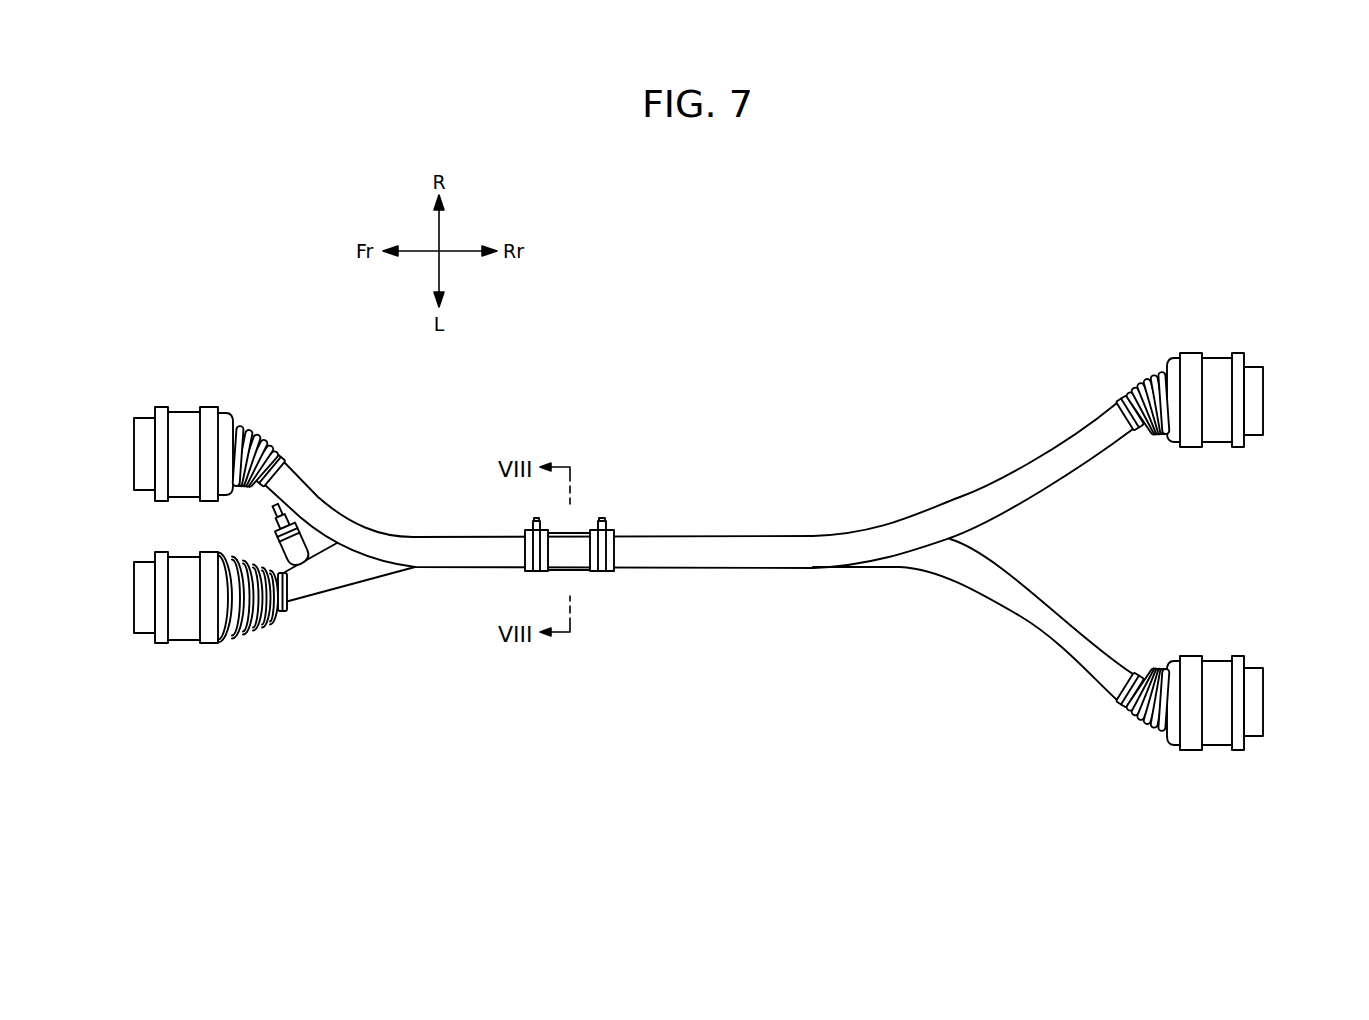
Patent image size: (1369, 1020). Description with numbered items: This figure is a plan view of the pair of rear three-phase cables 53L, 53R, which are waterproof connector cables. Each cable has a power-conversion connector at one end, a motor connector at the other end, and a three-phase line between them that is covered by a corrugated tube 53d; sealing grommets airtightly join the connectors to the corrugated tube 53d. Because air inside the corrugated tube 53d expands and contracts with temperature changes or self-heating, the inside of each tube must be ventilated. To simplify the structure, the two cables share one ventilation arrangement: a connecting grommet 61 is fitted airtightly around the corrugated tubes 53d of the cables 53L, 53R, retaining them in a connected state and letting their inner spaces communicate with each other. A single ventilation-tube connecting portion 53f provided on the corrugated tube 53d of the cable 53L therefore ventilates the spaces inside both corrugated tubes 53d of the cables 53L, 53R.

The corrugated tube 53d is at (973, 551).
The ventilation-tube connecting portion 53f is at (272, 513).
The rear three-phase cable 53R is at (990, 505).
The rear three-phase cable 53L is at (988, 575).
The connecting grommet 61 is at (573, 557).